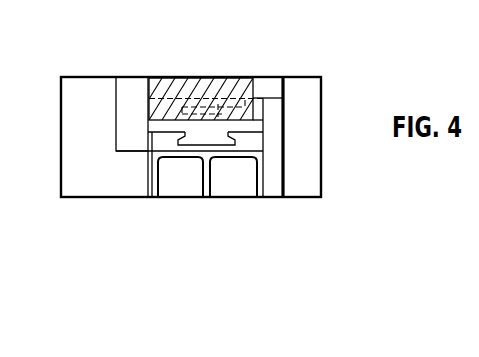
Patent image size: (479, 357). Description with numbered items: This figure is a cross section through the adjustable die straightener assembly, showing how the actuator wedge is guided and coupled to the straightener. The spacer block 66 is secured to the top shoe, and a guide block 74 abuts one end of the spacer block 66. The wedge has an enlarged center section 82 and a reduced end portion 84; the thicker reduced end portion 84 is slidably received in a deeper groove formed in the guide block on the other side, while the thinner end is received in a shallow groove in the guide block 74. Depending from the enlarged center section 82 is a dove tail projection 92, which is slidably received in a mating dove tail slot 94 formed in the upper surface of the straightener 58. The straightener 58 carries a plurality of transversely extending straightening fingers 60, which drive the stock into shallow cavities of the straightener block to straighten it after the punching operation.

The straightener 58 is at (248, 148).
The straightening fingers 60 is at (260, 187).
The spacer block 66 is at (132, 92).
The guide block 74 is at (312, 110).
The enlarged center section 82 is at (269, 88).
The reduced end portion 84 is at (177, 88).
The dove tail projection 92 is at (213, 133).
The dove tail slot 94 is at (183, 135).